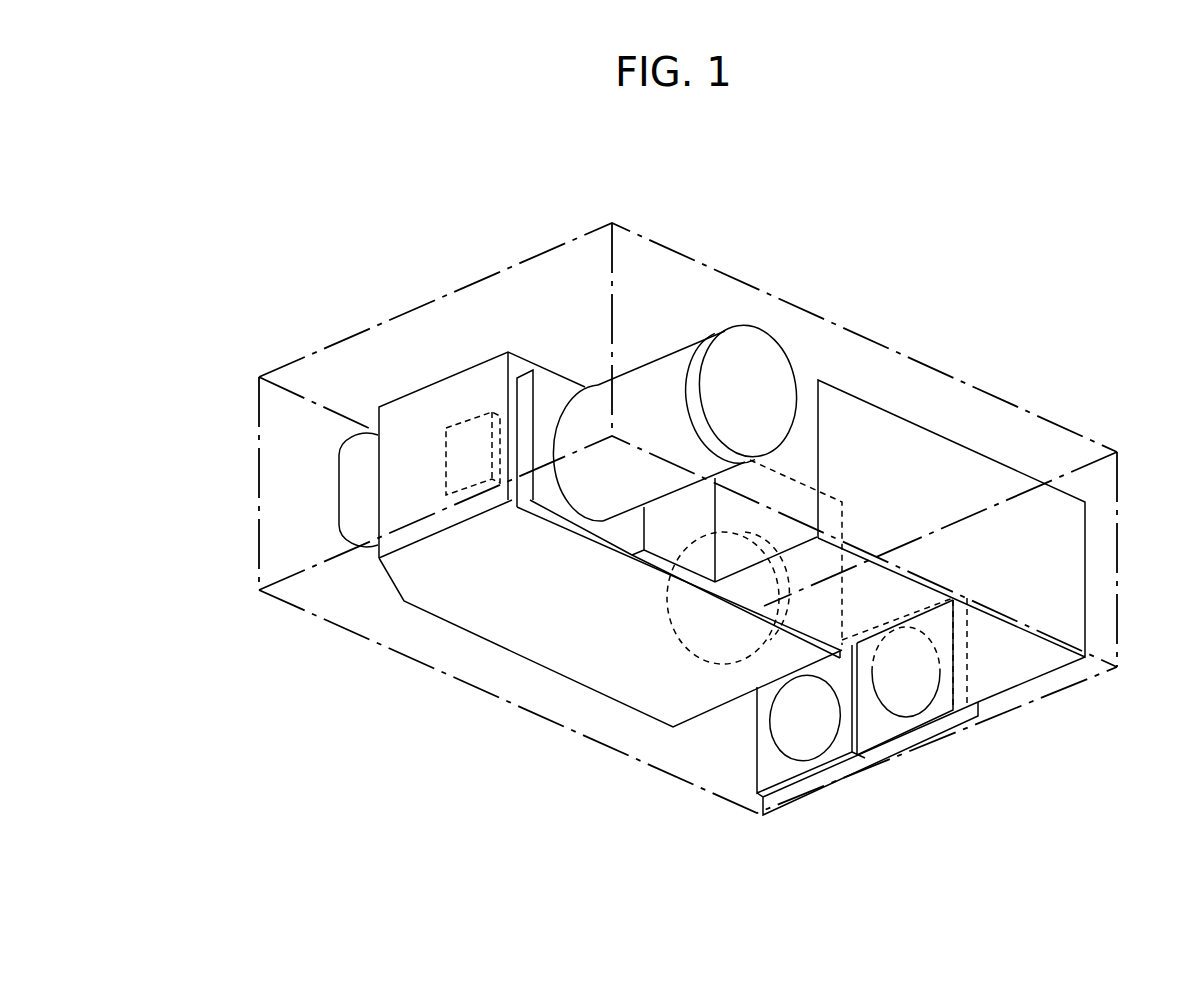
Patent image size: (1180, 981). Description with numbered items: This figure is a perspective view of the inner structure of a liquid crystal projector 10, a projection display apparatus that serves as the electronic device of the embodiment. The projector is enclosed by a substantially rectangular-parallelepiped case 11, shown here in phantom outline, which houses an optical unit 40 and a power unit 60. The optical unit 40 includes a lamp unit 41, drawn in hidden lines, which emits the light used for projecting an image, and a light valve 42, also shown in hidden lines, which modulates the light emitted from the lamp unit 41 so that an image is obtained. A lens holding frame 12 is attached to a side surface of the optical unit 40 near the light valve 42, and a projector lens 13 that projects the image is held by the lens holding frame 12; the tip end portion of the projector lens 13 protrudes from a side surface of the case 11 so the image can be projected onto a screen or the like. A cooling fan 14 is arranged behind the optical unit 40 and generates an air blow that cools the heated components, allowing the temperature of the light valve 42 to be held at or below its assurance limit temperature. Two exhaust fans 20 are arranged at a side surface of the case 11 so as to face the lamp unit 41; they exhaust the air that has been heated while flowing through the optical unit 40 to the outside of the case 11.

The liquid crystal projector 10 is at (993, 204).
The case 11 is at (285, 507).
The lens holding frame 12 is at (548, 393).
The projector lens 13 is at (746, 390).
The cooling fan 14 is at (352, 478).
The exhaust fan 20 is at (915, 698).
The optical unit 40 is at (455, 393).
The lamp unit 41 is at (692, 657).
The light valve 42 is at (457, 460).
The power unit 60 is at (937, 490).